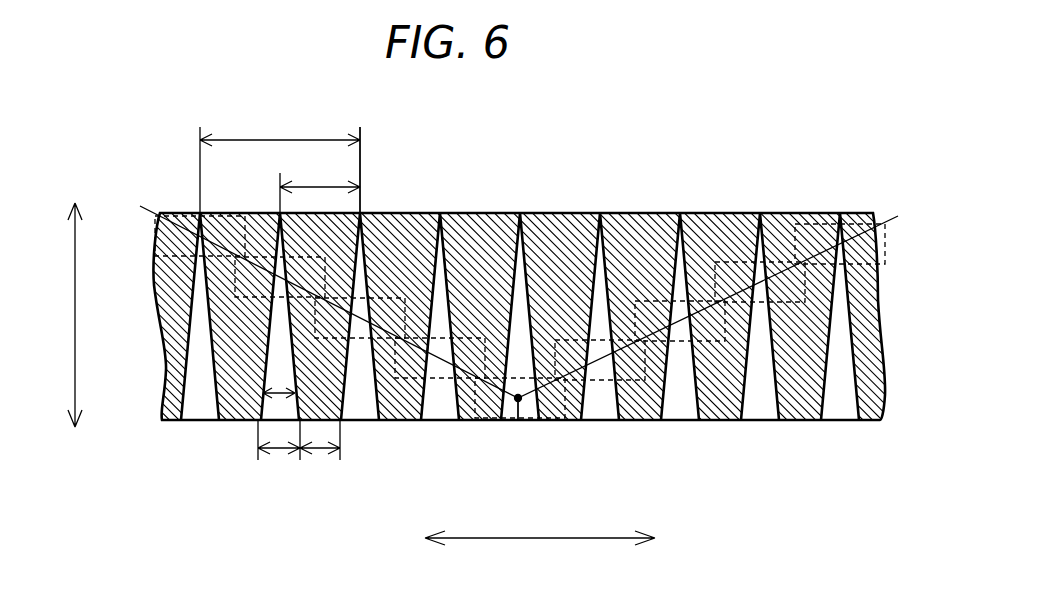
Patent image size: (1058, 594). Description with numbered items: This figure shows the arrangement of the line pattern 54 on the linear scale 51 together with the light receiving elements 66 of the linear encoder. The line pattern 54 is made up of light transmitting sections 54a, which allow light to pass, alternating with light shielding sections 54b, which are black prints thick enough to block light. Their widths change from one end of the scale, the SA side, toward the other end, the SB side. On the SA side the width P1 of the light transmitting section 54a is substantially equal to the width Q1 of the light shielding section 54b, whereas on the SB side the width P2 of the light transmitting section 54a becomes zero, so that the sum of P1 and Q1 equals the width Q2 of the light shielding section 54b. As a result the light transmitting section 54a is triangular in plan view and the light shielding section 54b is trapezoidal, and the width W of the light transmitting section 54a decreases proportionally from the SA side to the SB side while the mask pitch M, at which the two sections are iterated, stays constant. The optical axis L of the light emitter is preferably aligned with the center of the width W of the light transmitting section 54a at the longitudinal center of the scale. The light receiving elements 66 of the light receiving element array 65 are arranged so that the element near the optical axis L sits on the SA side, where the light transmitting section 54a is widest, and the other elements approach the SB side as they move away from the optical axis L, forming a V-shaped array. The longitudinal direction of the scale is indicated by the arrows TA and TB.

The linear scale 51 is at (518, 213).
The line pattern 54 is at (633, 243).
The light transmitting section 54a is at (430, 412).
The light shielding section 54b is at (475, 417).
The light receiving element array 65 is at (600, 380).
The light receiving element 66 is at (532, 432).
The optical axis L is at (521, 423).
The mask pitch M is at (280, 156).
The width of the light transmitting section on the SA side P1 is at (279, 452).
The width of the light transmitting section on the SB side P2 is at (362, 181).
The width of the light shielding section on the SA side Q1 is at (320, 452).
The width of the light shielding section on the SB side Q2 is at (320, 183).
The width of the light transmitting section W is at (279, 385).
The SA side SA is at (76, 452).
The SB side SB is at (76, 300).
The arrow TA is at (521, 537).
The arrow TB is at (673, 537).